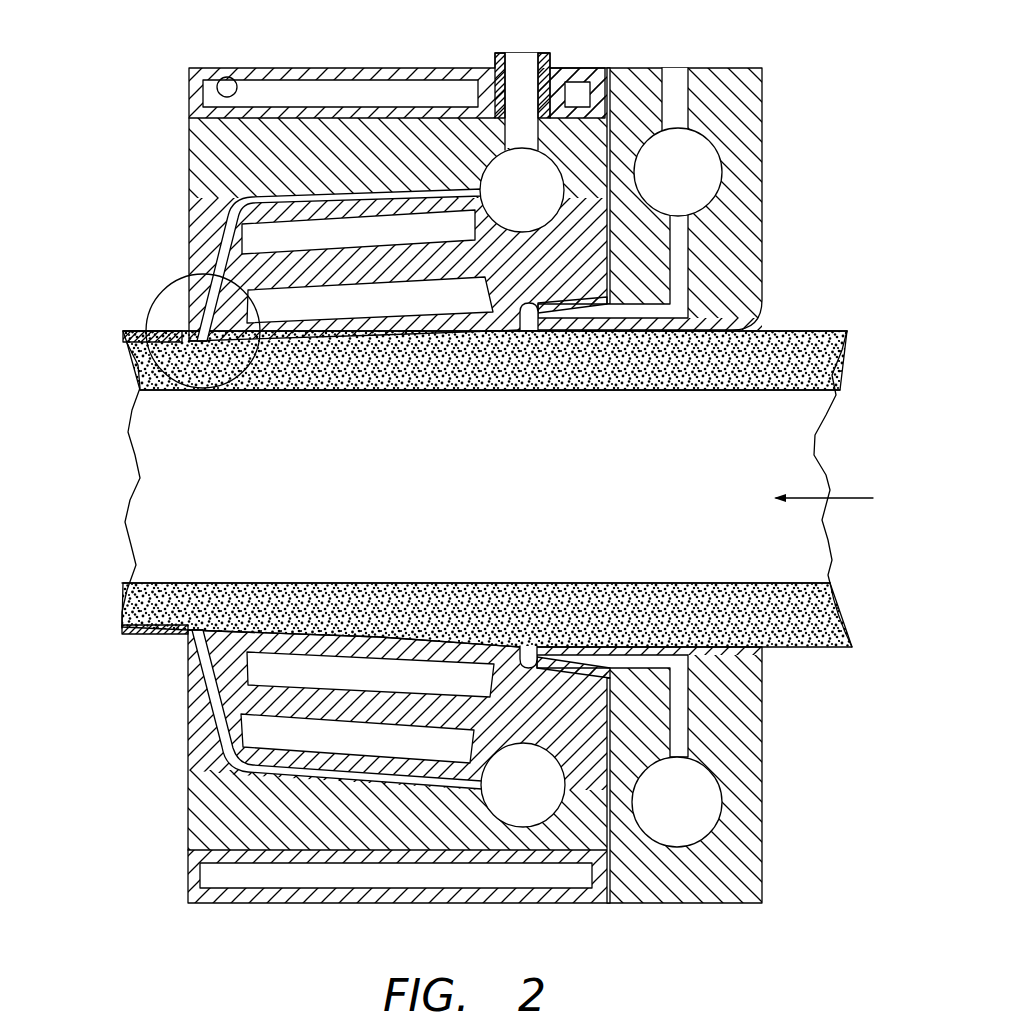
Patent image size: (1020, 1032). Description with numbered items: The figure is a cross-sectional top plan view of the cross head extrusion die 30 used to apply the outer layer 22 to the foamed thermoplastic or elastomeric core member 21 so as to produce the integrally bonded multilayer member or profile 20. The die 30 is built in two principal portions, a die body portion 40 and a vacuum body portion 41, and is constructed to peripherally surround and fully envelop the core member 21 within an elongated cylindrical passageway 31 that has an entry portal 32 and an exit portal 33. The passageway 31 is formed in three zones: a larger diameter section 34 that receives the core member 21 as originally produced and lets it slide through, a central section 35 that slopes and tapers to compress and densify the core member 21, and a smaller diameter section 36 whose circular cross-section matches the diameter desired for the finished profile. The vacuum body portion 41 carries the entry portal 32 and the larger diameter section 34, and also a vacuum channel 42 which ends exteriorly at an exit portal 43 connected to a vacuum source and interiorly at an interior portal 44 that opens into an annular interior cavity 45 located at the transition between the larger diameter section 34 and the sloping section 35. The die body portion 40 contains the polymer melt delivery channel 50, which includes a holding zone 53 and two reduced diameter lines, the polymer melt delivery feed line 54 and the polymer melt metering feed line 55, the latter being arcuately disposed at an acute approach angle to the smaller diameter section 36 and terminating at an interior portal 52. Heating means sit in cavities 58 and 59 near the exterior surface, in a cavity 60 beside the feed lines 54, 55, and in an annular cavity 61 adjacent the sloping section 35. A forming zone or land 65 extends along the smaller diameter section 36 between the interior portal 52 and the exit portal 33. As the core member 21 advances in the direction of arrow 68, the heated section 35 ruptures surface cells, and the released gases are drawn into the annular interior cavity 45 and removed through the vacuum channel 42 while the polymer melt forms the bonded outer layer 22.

The multilayer member or profile 20 is at (121, 494).
The core member 21 is at (162, 607).
The outer layer 22 is at (142, 635).
The cross head extrusion die 30 is at (185, 803).
The passageway 31 is at (591, 333).
The entry portal 32 is at (765, 313).
The exit portal 33 is at (196, 629).
The larger diameter section 34 is at (673, 333).
The central section 35 is at (413, 334).
The smaller diameter section 36 is at (223, 628).
The die body portion 40 is at (275, 903).
The vacuum body portion 41 is at (648, 903).
The vacuum channel 42 is at (688, 167).
The exit portal 43 is at (697, 68).
The interior portal 44 is at (560, 648).
The annular interior cavity 45 is at (528, 646).
The polymer melt delivery channel 50 is at (522, 68).
The interior portal 52 is at (205, 345).
The holding zone 53 is at (512, 185).
The polymer melt delivery feed line 54 is at (336, 230).
The polymer melt metering feed line 55 is at (190, 237).
The cavity 58 is at (222, 80).
The cavity 59 is at (582, 72).
The cavity 60 is at (280, 184).
The annular cavity 61 is at (222, 217).
The outer layer forming zone or land 65 is at (167, 390).
The arrow 68 is at (852, 495).